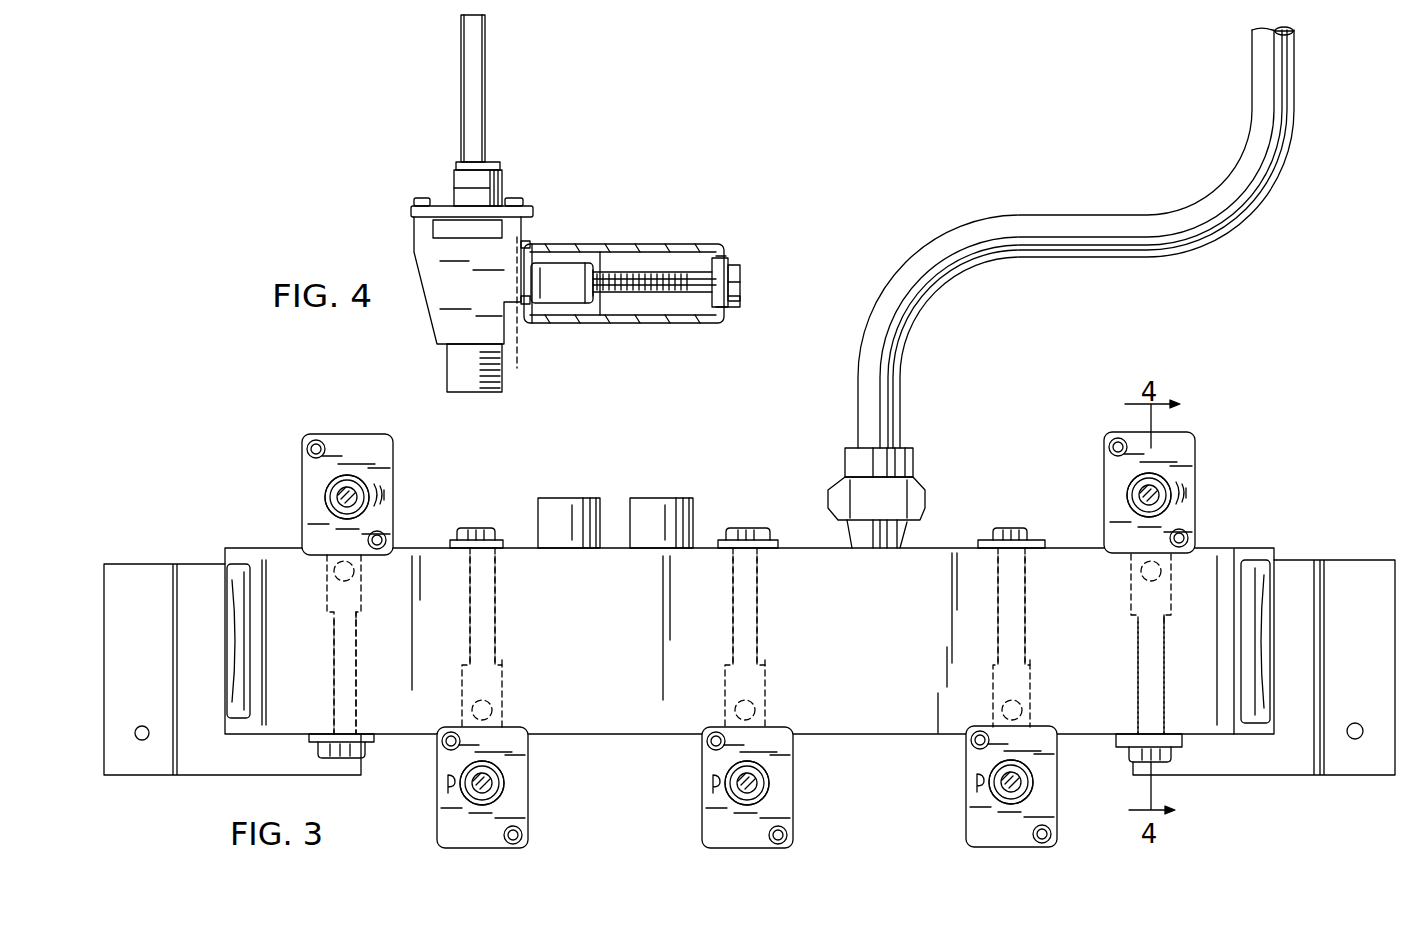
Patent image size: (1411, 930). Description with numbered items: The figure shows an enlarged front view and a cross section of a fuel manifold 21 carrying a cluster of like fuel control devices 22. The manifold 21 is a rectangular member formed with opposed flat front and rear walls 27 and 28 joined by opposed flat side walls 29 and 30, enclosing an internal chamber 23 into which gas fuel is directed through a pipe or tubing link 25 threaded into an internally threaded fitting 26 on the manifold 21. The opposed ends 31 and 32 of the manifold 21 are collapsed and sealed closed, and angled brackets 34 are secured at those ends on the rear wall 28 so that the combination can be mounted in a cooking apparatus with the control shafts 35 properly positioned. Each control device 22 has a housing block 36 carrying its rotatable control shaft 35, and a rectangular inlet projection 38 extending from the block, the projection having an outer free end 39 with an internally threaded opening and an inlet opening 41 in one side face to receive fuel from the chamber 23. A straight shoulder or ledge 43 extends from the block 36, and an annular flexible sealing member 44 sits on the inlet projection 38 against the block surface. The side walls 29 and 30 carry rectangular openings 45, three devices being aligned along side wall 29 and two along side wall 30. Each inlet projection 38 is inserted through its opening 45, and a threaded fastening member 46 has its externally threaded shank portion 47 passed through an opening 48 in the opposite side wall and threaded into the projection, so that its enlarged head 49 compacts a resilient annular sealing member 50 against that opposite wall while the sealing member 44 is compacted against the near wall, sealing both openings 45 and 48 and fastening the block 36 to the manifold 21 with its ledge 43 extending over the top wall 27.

In FIG. 3, the fuel manifold 21 is at (622, 745).
In FIG. 4, the fuel manifold 21 is at (708, 234).
In FIG. 3, the fuel control device 22 is at (290, 468).
In FIG. 4, the fuel control device 22 is at (400, 236).
In FIG. 4, the internal chamber 23 is at (650, 262).
In FIG. 3, the pipe or tubing link 25 is at (1250, 112).
In FIG. 3, the internally threaded fitting 26 is at (925, 492).
In FIG. 3, the front wall 27 is at (880, 735).
In FIG. 4, the front wall 27 is at (610, 245).
In FIG. 4, the rear wall 28 is at (618, 325).
In FIG. 3, the side wall 29 is at (924, 735).
In FIG. 4, the side wall 29 is at (730, 262).
In FIG. 3, the side wall 30 is at (940, 547).
In FIG. 4, the side wall 30 is at (517, 258).
In FIG. 3, the opposed end 31 is at (240, 605).
In FIG. 3, the opposed end 32 is at (1258, 590).
In FIG. 3, the angled bracket 34 is at (230, 775).
In FIG. 3, the control shaft 35 is at (327, 497).
In FIG. 4, the control shaft 35 is at (461, 70).
In FIG. 4, the housing block 36 is at (445, 312).
In FIG. 3, the inlet projection 38 is at (330, 610).
In FIG. 4, the inlet projection 38 is at (565, 270).
In FIG. 3, the outer free end 39 is at (360, 617).
In FIG. 4, the outer free end 39 is at (592, 305).
In FIG. 3, the inlet opening 41 is at (334, 576).
In FIG. 4, the shoulder or ledge 43 is at (530, 245).
In FIG. 4, the annular flexible sealing member 44 is at (526, 312).
In FIG. 4, the rectangular opening 45 is at (552, 292).
In FIG. 3, the threaded fastening member 46 is at (334, 685).
In FIG. 4, the threaded fastening member 46 is at (680, 293).
In FIG. 4, the externally threaded shank portion 47 is at (635, 300).
In FIG. 4, the opening 48 is at (740, 275).
In FIG. 3, the enlarged head 49 is at (462, 528).
In FIG. 4, the enlarged head 49 is at (735, 300).
In FIG. 4, the resilient annular sealing member 50 is at (725, 258).